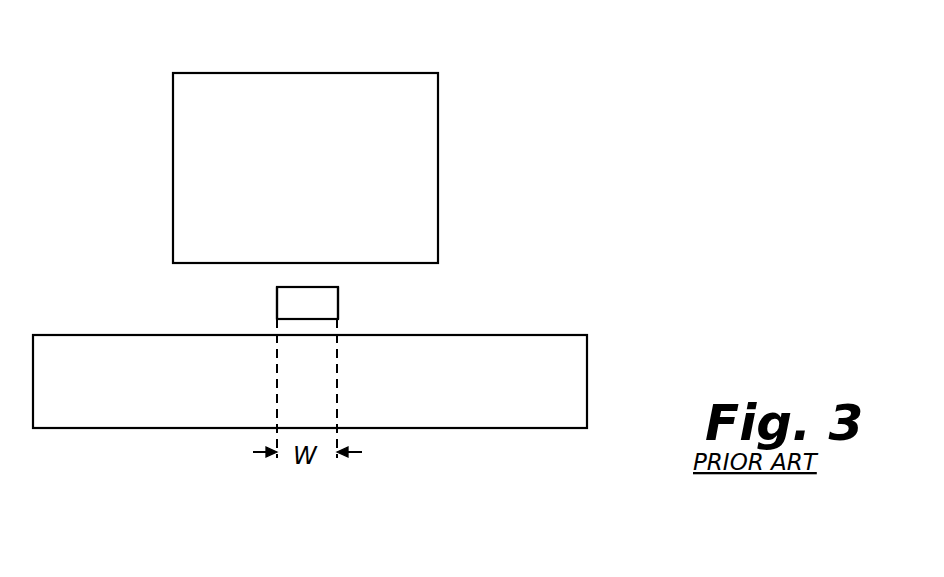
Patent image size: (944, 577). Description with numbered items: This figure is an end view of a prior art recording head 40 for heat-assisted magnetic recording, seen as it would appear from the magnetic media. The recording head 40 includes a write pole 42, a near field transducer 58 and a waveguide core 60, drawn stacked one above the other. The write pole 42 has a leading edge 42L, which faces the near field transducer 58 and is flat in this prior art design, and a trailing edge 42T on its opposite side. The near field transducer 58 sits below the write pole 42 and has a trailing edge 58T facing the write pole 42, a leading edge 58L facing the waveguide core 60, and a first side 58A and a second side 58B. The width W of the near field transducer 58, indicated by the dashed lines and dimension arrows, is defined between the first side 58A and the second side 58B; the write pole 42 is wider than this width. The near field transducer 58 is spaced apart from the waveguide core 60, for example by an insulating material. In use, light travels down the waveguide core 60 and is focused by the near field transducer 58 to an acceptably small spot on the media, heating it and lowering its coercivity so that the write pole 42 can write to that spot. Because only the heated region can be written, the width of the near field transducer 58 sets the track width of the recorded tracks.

The recording head 40 is at (548, 83).
The write pole 42 is at (438, 118).
The trailing edge 42T is at (310, 73).
The leading edge 42L is at (200, 263).
The near field transducer 58 is at (307, 303).
The first side 58A is at (277, 298).
The second side 58B is at (338, 293).
The trailing edge 58T is at (322, 287).
The leading edge 58L is at (278, 322).
The waveguide core 60 is at (587, 358).